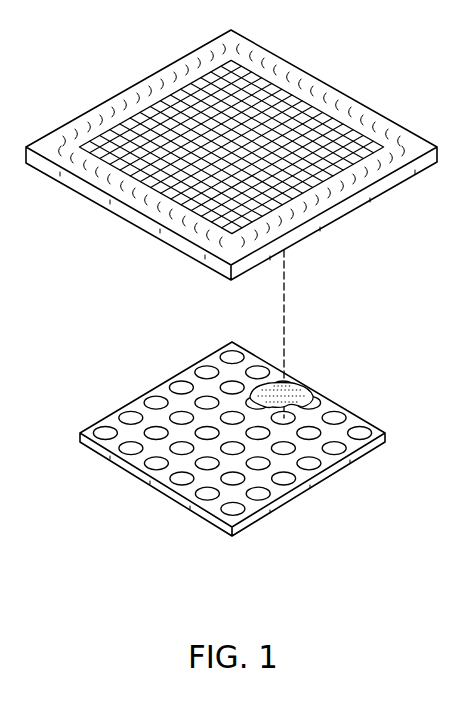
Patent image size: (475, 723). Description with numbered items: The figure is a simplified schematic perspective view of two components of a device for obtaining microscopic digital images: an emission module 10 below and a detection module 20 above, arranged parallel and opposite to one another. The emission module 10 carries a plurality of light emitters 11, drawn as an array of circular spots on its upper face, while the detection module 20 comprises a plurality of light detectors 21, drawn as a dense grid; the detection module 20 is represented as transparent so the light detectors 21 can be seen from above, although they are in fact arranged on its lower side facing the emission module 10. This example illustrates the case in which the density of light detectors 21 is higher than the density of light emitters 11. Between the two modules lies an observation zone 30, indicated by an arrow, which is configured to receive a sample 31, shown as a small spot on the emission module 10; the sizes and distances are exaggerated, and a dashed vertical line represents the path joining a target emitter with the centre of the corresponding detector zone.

The emission module 10 is at (115, 411).
The light emitters 11 is at (182, 415).
The detection module 20 is at (113, 97).
The light detectors 21 is at (213, 107).
The observation zone 30 is at (325, 303).
The sample 31 is at (305, 395).